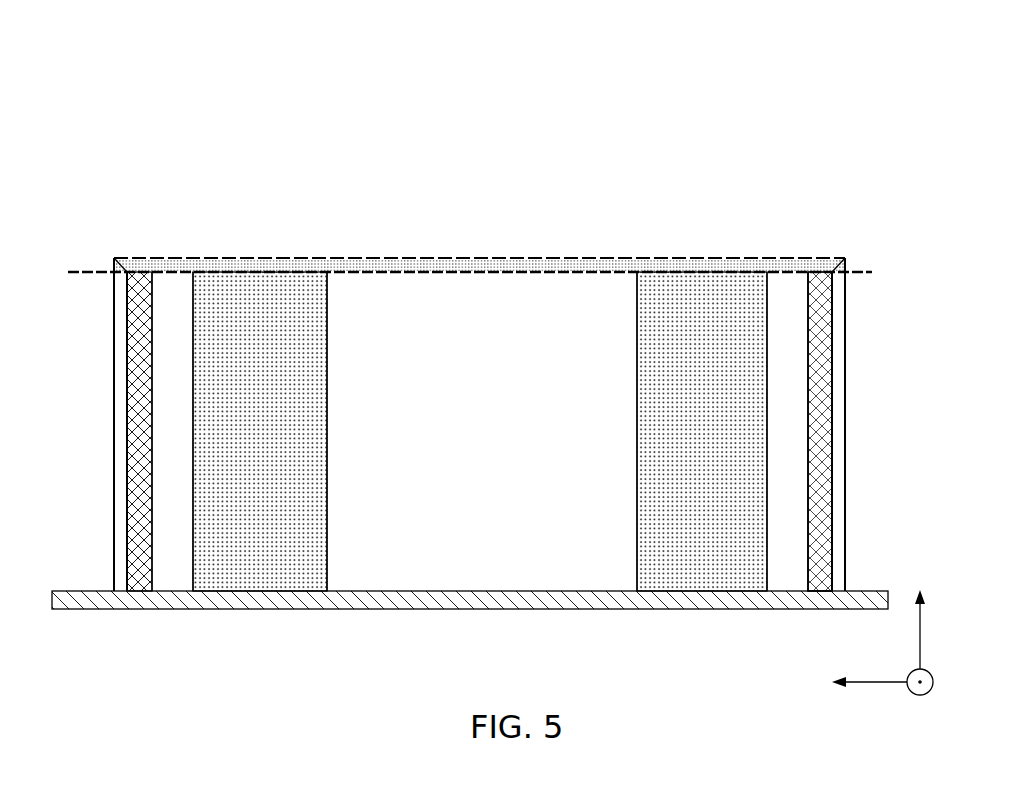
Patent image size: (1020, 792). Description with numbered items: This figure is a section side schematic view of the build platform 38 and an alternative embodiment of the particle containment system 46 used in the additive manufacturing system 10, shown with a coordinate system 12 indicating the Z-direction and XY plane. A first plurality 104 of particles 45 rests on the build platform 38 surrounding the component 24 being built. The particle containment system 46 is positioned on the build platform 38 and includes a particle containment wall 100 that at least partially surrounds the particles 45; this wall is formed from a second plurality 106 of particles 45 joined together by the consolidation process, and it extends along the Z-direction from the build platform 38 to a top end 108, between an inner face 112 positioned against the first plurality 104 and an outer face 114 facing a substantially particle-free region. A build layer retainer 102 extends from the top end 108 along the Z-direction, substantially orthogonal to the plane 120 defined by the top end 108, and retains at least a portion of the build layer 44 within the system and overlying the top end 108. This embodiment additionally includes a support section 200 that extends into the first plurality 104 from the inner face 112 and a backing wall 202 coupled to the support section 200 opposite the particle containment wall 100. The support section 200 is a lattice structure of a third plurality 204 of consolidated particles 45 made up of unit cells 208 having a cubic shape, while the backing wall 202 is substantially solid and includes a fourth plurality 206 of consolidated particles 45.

The additive manufacturing system 10 is at (270, 100).
The coordinate system 12 is at (912, 546).
The component 24 is at (355, 290).
The build platform 38 is at (86, 596).
The build layer 44 is at (446, 256).
The particles 45 is at (220, 292).
The particle containment system 46 is at (212, 148).
The particle containment wall 100 is at (116, 312).
The build layer retainer 102 is at (113, 263).
The first plurality of particles 104 is at (720, 290).
The second plurality of particles 106 is at (841, 296).
The top end 108 is at (115, 248).
The inner face 112 is at (128, 357).
The outer face 114 is at (114, 425).
The plane 120 is at (870, 264).
The support section 200 is at (142, 266).
The backing wall 202 is at (172, 294).
The third plurality of particles 204 is at (822, 332).
The fourth plurality of particles 206 is at (775, 286).
The unit cells 208 is at (820, 290).